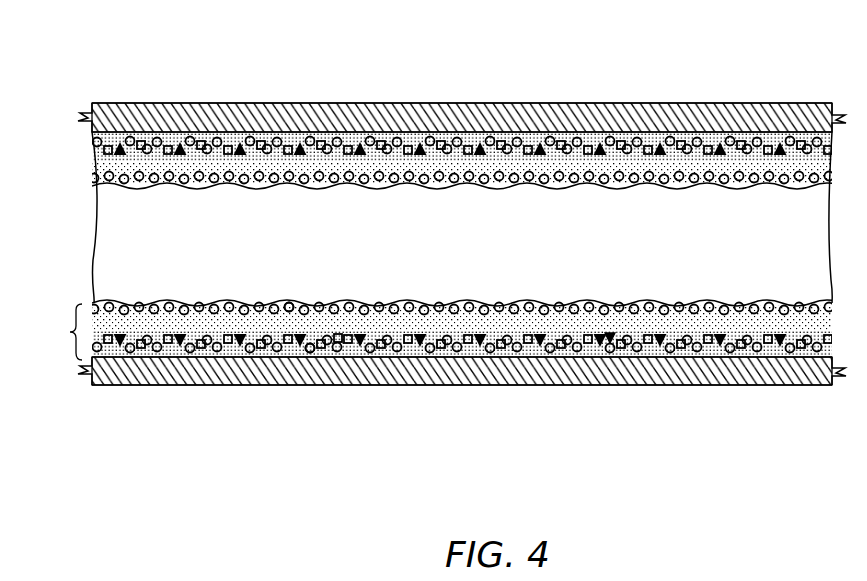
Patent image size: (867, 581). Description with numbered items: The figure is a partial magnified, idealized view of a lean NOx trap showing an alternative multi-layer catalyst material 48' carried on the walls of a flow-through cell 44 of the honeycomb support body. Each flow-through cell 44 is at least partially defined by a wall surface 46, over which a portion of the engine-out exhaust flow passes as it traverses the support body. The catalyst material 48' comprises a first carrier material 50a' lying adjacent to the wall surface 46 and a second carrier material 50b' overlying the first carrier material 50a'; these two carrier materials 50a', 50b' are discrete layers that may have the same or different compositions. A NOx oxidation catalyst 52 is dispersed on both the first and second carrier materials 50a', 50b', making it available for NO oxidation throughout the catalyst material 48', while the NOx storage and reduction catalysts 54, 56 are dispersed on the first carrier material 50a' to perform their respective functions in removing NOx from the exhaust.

The flow-through cell 44 is at (86, 247).
The wall surface 46 is at (439, 268).
The catalyst material 48' is at (439, 404).
The first carrier material 50a' is at (456, 410).
The second carrier material 50b' is at (462, 406).
The NOx oxidation catalyst 52 is at (289, 313).
The NOx storage and reduction catalyst 54 is at (338, 343).
The NOx storage and reduction catalyst 56 is at (610, 338).